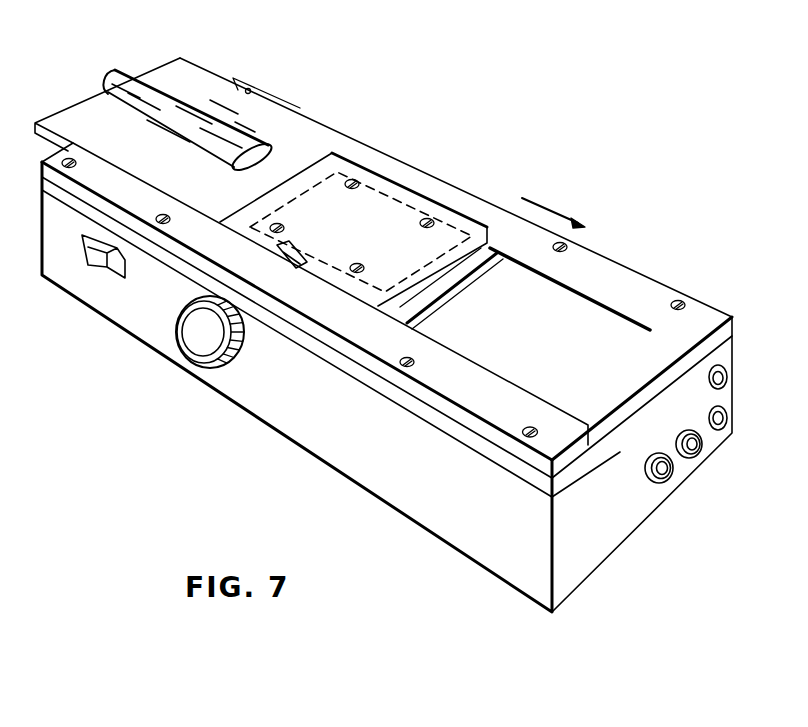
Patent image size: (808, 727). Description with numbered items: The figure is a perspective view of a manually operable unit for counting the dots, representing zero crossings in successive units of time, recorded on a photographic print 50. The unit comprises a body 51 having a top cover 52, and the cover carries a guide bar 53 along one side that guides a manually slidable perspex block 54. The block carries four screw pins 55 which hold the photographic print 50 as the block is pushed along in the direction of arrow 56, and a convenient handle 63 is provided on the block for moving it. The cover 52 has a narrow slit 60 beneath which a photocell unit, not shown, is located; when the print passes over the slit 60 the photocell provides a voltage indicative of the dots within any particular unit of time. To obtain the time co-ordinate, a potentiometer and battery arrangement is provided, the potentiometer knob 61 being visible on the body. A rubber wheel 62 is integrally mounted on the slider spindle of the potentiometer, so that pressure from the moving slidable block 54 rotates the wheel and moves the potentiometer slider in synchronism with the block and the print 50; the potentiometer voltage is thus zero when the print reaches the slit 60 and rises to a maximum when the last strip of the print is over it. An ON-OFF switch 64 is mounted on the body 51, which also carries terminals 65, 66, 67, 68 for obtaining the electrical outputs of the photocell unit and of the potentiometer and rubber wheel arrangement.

The photographic print 50 is at (492, 252).
The body 51 is at (615, 523).
The top cover 52 is at (700, 318).
The guide bar 53 is at (543, 407).
The slidable perspex block 54 is at (275, 118).
The screw pins 55 is at (352, 183).
The arrow 56 is at (535, 203).
The slit 60 is at (458, 286).
The potentiometer knob 61 is at (193, 350).
The rubber wheel 62 is at (290, 254).
The handle 63 is at (108, 85).
The ON-OFF switch 64 is at (108, 267).
The terminal 65 is at (727, 372).
The terminal 66 is at (732, 418).
The terminal 67 is at (698, 450).
The terminal 68 is at (662, 477).